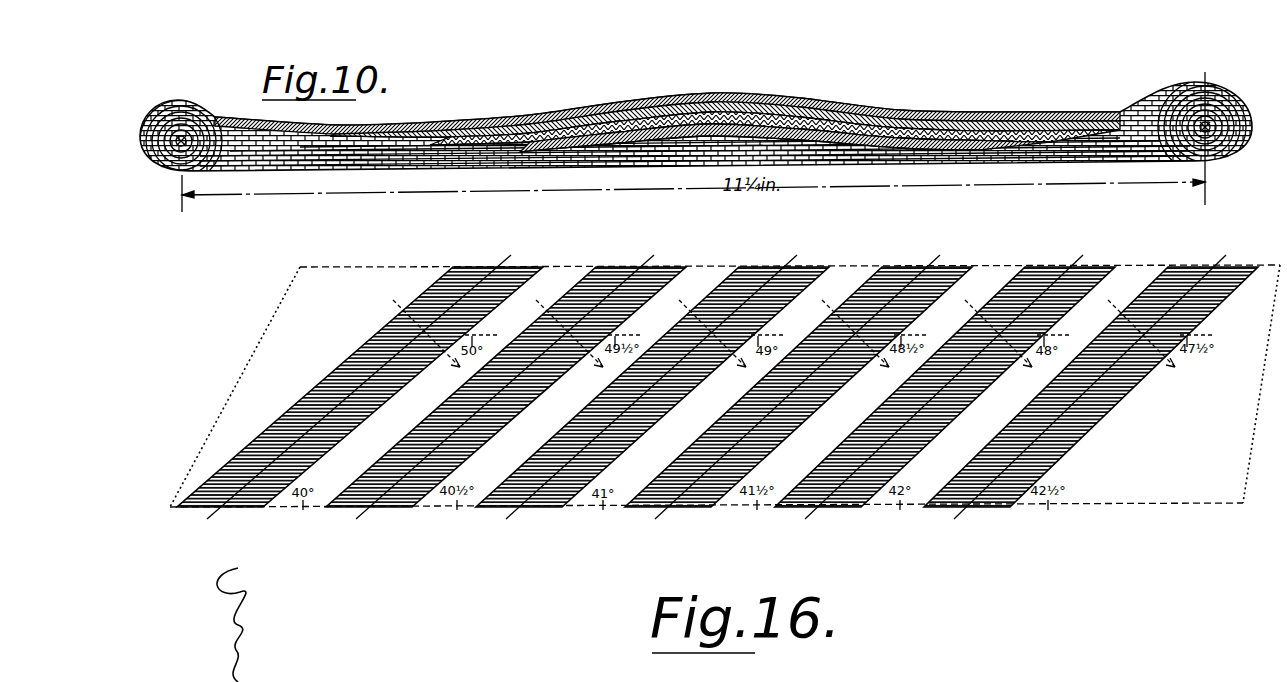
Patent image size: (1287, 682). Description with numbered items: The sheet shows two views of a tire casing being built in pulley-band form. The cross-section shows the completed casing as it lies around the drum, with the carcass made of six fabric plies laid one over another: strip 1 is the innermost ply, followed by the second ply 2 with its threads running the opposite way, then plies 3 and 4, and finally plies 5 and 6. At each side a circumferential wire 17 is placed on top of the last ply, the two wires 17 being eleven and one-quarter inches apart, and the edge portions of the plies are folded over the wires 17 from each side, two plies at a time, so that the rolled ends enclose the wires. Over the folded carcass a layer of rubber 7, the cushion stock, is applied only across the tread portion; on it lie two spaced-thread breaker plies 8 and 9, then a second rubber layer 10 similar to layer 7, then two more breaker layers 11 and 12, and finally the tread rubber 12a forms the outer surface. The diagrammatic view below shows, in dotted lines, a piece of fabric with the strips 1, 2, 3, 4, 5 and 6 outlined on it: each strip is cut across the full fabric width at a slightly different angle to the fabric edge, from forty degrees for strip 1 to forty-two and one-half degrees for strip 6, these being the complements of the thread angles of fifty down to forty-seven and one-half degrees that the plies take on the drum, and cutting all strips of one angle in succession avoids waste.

In FIG. 10, the first ply strip 1 is at (459, 169).
In FIG. 16, the first ply strip 1 is at (362, 351).
In FIG. 10, the second ply strip 2 is at (503, 167).
In FIG. 16, the second ply strip 2 is at (452, 404).
In FIG. 10, the third ply strip 3 is at (543, 166).
In FIG. 16, the third ply strip 3 is at (592, 408).
In FIG. 10, the fourth ply strip 4 is at (566, 165).
In FIG. 16, the fourth ply strip 4 is at (727, 424).
In FIG. 10, the fifth ply strip 5 is at (603, 165).
In FIG. 16, the fifth ply strip 5 is at (864, 428).
In FIG. 10, the sixth ply strip 6 is at (654, 165).
In FIG. 16, the sixth ply strip 6 is at (1010, 424).
In FIG. 10, the rubber layer 7 is at (653, 105).
In FIG. 10, the breaker ply 8 is at (860, 106).
In FIG. 10, the breaker ply 9 is at (895, 106).
In FIG. 10, the rubber layer 10 is at (828, 113).
In FIG. 10, the breaker layer 11 is at (786, 108).
In FIG. 10, the breaker layer 12 is at (756, 98).
In FIG. 10, the tread rubber 12a is at (700, 96).
In FIG. 10, the circumferential wires 17 is at (170, 174).